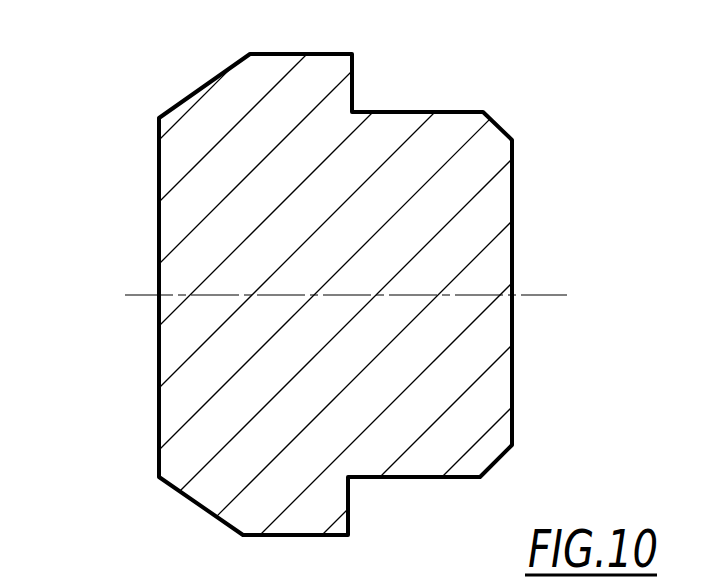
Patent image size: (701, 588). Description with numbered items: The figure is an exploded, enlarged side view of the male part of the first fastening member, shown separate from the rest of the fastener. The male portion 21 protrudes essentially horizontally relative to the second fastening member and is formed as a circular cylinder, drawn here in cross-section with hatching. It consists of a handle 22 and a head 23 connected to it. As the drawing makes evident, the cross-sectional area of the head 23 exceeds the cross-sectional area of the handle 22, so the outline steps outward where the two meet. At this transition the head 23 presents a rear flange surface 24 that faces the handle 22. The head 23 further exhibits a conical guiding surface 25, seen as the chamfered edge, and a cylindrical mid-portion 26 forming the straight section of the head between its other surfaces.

The male portion 21 is at (147, 178).
The handle 22 is at (455, 110).
The head 23 is at (328, 50).
The rear flange surface 24 is at (353, 82).
The conical guiding surface 25 is at (185, 100).
The cylindrical mid-portion 26 is at (283, 538).